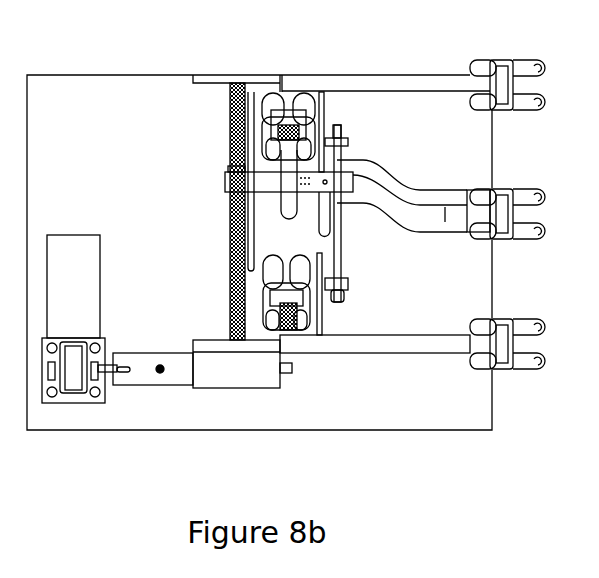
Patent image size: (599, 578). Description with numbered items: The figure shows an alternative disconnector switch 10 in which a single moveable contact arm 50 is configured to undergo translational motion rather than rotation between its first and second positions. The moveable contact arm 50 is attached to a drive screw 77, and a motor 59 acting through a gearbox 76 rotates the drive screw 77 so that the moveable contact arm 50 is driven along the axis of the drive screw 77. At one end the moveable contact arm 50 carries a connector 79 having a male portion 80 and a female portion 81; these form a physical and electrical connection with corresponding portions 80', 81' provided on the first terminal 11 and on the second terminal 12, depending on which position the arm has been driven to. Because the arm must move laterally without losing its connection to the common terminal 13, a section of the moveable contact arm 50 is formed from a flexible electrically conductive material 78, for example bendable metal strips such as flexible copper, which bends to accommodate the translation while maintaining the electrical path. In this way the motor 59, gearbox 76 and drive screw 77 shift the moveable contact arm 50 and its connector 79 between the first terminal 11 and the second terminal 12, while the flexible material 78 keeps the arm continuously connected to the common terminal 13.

The disconnector switch 10 is at (55, 119).
The first terminal 11 is at (375, 77).
The second terminal 12 is at (377, 342).
The common terminal 13 is at (502, 200).
The moveable contact arm 50 is at (213, 182).
The motor 59 is at (59, 307).
The gearbox 76 is at (220, 384).
The drive screw 77 is at (230, 247).
The flexible electrically conductive material 78 is at (413, 222).
The connector 79 is at (327, 112).
The male portion 80 is at (286, 270).
The corresponding portion 80' is at (356, 213).
The female portion 81 is at (236, 125).
The corresponding portion 81' is at (221, 168).